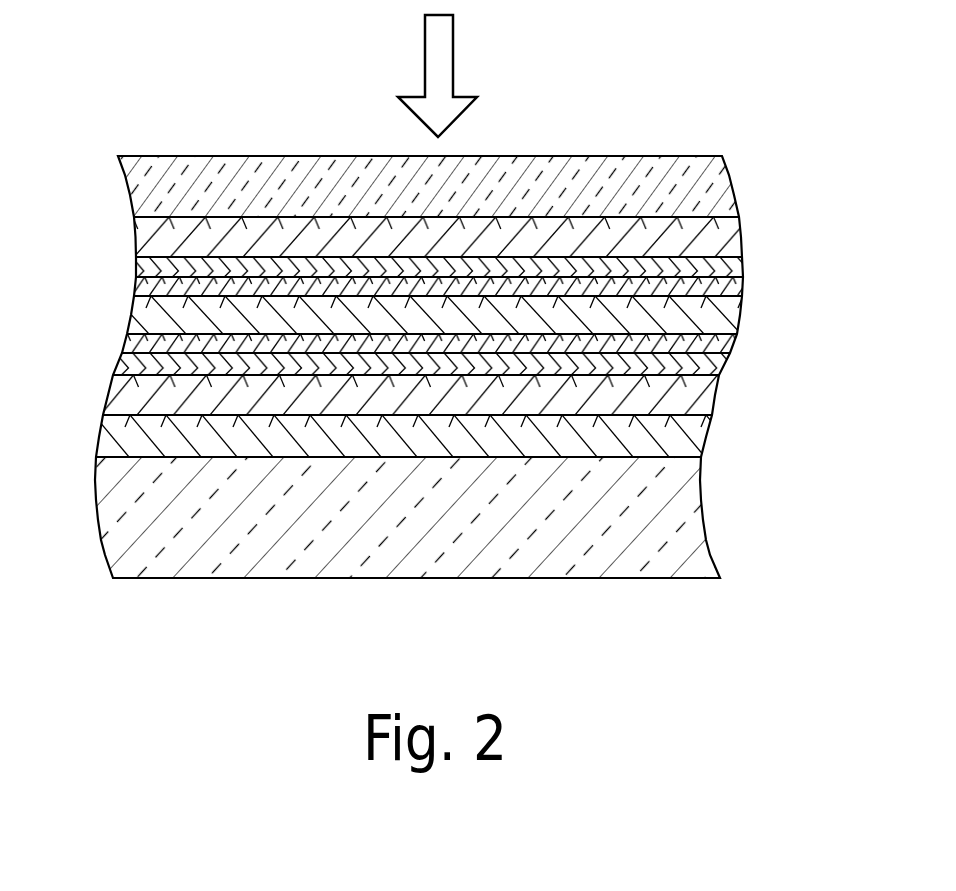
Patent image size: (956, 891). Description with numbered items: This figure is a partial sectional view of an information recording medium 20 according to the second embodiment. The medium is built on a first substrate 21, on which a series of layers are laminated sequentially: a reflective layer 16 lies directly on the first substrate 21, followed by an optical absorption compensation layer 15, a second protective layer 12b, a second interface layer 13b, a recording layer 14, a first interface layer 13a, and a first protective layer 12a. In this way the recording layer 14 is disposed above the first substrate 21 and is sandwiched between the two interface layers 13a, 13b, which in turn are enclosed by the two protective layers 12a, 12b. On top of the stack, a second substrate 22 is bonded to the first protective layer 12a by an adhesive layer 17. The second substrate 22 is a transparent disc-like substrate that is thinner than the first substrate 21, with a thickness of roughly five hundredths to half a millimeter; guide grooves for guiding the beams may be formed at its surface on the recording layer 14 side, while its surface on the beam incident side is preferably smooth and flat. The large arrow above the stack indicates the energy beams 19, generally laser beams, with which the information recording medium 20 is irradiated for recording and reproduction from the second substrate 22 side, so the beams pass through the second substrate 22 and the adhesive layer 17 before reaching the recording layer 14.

The information recording medium 20 is at (93, 115).
The energy beams 19 is at (452, 57).
The second substrate 22 is at (738, 187).
The adhesive layer 17 is at (740, 235).
The first protective layer 12a is at (741, 268).
The first interface layer 13a is at (743, 287).
The recording layer 14 is at (737, 317).
The second interface layer 13b is at (730, 348).
The second protective layer 12b is at (720, 365).
The optical absorption compensation layer 15 is at (712, 402).
The reflective layer 16 is at (705, 438).
The first substrate 21 is at (707, 520).